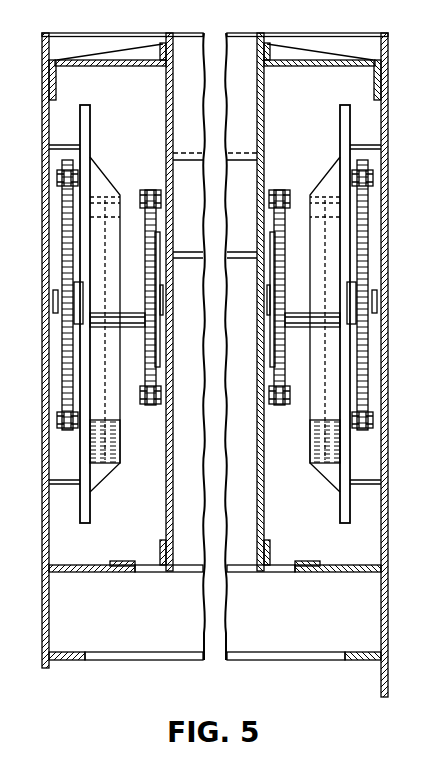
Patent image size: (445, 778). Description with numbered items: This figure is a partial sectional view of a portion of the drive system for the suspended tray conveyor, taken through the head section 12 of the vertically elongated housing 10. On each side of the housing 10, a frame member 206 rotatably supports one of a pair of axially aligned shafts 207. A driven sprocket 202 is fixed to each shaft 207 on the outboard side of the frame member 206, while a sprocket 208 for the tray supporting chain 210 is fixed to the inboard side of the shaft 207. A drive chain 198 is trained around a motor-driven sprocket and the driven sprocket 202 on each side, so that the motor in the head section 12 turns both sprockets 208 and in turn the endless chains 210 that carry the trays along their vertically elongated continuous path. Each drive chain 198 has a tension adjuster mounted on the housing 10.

The housing 10 is at (389, 357).
The head section 12 is at (390, 495).
The drive chain 198 is at (59, 176).
The driven sprocket 202 is at (62, 236).
The frame member 206 is at (91, 150).
The shaft 207 is at (157, 296).
The sprocket 208 is at (143, 232).
The chain 210 is at (128, 402).